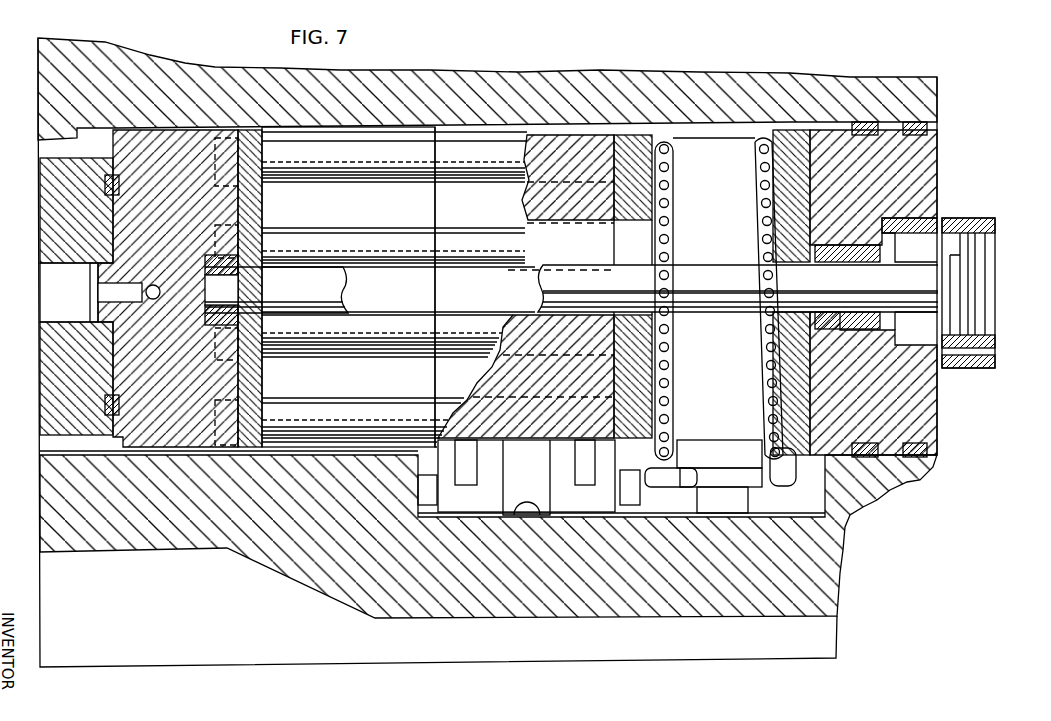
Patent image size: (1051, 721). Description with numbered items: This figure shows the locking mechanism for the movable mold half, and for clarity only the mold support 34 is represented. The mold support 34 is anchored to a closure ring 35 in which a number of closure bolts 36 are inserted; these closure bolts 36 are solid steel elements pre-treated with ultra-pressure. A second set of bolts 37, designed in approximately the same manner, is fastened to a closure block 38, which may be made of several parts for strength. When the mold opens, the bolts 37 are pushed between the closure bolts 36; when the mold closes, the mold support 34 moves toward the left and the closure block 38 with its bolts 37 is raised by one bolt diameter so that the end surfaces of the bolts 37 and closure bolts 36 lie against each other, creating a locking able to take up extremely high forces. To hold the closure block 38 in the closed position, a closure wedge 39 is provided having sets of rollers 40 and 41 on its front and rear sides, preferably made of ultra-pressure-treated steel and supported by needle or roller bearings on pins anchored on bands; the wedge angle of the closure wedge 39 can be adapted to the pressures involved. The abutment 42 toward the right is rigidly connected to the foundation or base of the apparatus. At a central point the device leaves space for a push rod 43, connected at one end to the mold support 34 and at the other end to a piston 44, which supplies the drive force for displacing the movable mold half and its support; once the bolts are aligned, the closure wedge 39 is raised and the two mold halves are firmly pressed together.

The mold support 34 is at (52, 385).
The closure ring 35 is at (215, 383).
The closure bolts 36 is at (392, 172).
The bolts 37 is at (510, 170).
The closure block 38 is at (629, 145).
The closure wedge 39 is at (720, 207).
The rollers 40 is at (673, 140).
The rollers 41 is at (752, 143).
The abutment 42 is at (790, 143).
The push rod 43 is at (343, 305).
The piston 44 is at (990, 293).